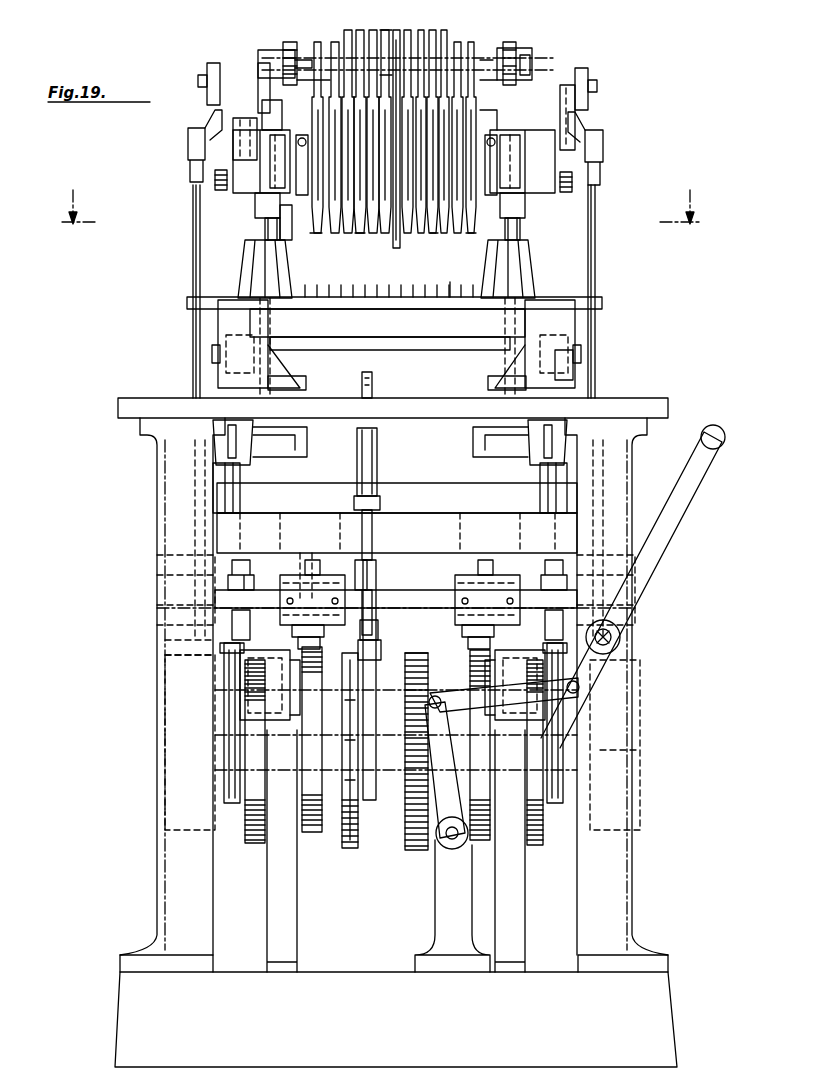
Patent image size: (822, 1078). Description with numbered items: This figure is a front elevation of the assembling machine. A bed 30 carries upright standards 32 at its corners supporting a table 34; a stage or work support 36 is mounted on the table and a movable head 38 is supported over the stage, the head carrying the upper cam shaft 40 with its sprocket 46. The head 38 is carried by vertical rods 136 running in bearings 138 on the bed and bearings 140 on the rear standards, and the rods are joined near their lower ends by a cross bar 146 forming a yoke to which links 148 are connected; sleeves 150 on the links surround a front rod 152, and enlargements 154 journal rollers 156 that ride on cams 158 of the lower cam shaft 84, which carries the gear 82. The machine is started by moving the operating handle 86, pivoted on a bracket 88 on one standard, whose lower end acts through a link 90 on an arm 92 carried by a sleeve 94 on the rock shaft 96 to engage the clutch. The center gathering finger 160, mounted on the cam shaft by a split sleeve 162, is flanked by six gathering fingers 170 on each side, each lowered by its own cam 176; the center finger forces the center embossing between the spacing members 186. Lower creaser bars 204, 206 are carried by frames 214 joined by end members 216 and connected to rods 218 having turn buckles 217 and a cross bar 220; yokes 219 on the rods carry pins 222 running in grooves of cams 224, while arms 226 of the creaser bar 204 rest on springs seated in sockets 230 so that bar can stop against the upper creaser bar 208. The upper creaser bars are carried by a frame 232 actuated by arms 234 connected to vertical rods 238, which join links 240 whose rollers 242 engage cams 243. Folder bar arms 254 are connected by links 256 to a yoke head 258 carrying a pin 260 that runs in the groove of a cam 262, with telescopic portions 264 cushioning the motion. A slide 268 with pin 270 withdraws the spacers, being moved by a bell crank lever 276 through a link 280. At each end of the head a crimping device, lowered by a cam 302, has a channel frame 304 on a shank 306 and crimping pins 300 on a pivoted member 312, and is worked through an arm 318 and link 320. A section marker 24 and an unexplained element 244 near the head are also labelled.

The section line 24 is at (382, 207).
The bed 30 is at (660, 1006).
The upright posts or standards 32 is at (170, 832).
The table 34 is at (662, 408).
The stage or work support 36 is at (451, 275).
The movable head 38 is at (492, 114).
The cam shaft 40 is at (512, 48).
The sprocket 46 is at (286, 50).
The gear 82 is at (404, 658).
The lower cam shaft 84 is at (640, 752).
The operating handle 86 is at (672, 530).
The bracket 88 is at (622, 640).
The link 90 is at (450, 692).
The arm 92 is at (410, 812).
The sleeve 94 is at (460, 845).
The rock shaft 96 is at (440, 845).
The vertical rods 136 is at (266, 228).
The bearings 138 is at (246, 265).
The bearings 140 is at (245, 676).
The cross bar 146 is at (452, 500).
The links 148 is at (318, 560).
The sleeves 150 is at (300, 575).
The rod or shaft 152 is at (395, 590).
The enlargements 154 is at (315, 640).
The rollers 156 is at (312, 650).
The cams 158 is at (312, 835).
The center gathering finger 160 is at (396, 235).
The split sleeve 162 is at (396, 30).
The gathering fingers 170 is at (360, 233).
The cams 176 is at (347, 40).
The spacing members 186 is at (408, 296).
The creaser bar 204 is at (455, 322).
The creaser bar 206 is at (430, 330).
The creaser bar 208 is at (296, 222).
The frames 214 is at (220, 355).
The end members 216 is at (572, 360).
The turn buckles 217 is at (232, 580).
The vertically movable rods 218 is at (230, 482).
The yokes 219 is at (232, 805).
The cross bar 220 is at (322, 512).
The pins 222 is at (240, 693).
The cams 224 is at (255, 845).
The arms 226 is at (280, 368).
The sockets 230 is at (260, 433).
The frame 232 is at (258, 200).
The arms 234 is at (190, 120).
The vertical rods 238 is at (195, 285).
The links 240 is at (160, 600).
The rollers 242 is at (168, 650).
The cams 243 is at (165, 700).
The stud 244 is at (280, 130).
The arms 254 is at (380, 560).
The links 256 is at (362, 380).
The head 258 is at (372, 700).
The pin 260 is at (352, 664).
The cam 262 is at (352, 850).
The telescopic portions 264 is at (378, 470).
The slide 268 is at (215, 215).
The pin 270 is at (268, 236).
The bell crank lever 276 is at (248, 100).
The link 280 is at (238, 100).
The crimping pins 300 is at (318, 233).
The cam 302 is at (328, 40).
The channel shaped frame 304 is at (285, 190).
The shank 306 is at (315, 88).
The pivoted member 312 is at (512, 218).
The arm 318 is at (494, 128).
The link 320 is at (302, 136).